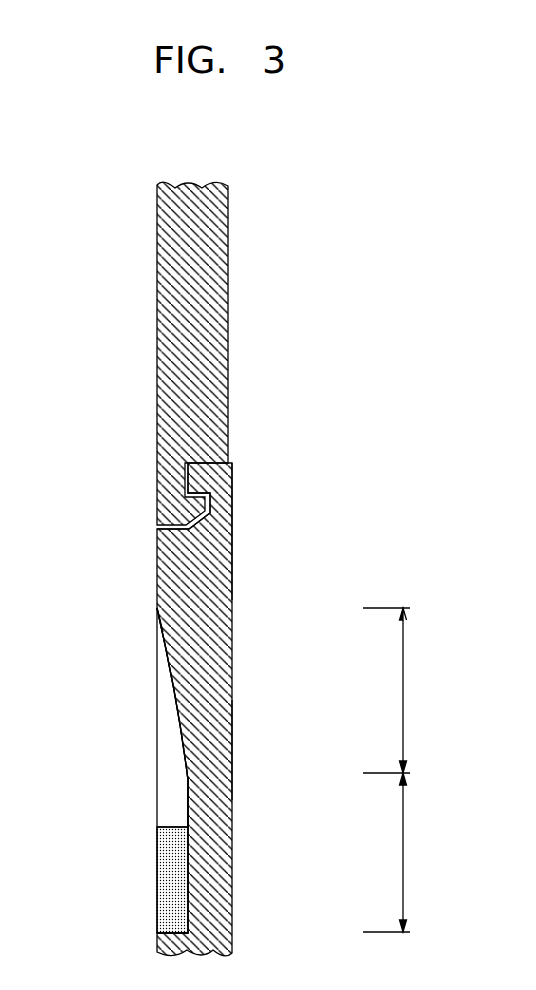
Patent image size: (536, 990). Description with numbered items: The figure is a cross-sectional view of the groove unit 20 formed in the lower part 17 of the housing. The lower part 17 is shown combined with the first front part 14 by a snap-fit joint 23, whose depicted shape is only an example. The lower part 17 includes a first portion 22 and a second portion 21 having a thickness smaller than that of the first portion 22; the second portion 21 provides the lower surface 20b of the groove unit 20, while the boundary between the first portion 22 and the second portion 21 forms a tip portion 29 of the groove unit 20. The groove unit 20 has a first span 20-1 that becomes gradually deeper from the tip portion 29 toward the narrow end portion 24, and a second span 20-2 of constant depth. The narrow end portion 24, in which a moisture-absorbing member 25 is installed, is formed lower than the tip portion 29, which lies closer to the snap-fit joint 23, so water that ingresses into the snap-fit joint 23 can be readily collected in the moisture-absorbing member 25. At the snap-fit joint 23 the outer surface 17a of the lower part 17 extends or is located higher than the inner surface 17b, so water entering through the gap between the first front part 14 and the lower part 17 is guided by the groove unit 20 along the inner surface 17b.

The first front part 14 is at (228, 287).
The lower part 17 is at (262, 663).
The outer surface 17a is at (232, 540).
The inner surface 17b is at (157, 530).
The snap-fit joint 23 is at (231, 463).
The tip portion 29 is at (157, 609).
The first portion 22 is at (157, 713).
The second portion 21 is at (220, 755).
The groove unit 20 is at (150, 785).
The lower surface 20b is at (188, 806).
The moisture-absorbing member 25 is at (157, 860).
The narrow end portion 24 is at (160, 908).
The first span 20-1 is at (411, 690).
The second span 20-2 is at (411, 852).